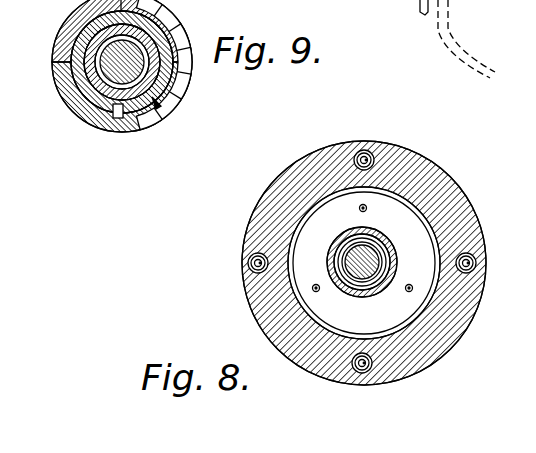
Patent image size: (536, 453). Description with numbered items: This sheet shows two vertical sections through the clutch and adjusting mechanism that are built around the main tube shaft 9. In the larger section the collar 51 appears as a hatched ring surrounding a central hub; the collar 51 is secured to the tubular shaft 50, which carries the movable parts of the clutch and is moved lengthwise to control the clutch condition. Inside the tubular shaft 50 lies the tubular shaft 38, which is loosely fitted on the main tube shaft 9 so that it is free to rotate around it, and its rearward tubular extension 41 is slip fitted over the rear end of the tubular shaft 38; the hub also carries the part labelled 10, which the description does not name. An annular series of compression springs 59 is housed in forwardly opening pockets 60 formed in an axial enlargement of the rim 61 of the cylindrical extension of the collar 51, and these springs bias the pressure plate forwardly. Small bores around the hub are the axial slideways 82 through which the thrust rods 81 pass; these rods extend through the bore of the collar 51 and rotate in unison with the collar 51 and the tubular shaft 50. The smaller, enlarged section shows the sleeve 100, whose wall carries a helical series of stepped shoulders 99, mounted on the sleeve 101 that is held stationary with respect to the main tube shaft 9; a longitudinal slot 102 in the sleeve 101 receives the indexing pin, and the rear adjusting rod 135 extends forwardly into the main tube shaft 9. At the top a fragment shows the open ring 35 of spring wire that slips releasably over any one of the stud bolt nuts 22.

In FIG. 9, the sleeve 100 is at (52, 62).
In FIG. 9, the stepped shoulders 99 is at (150, 2).
In FIG. 9, the main tube shaft 9 is at (154, 77).
In FIG. 8, the main tube shaft 9 is at (378, 260).
In FIG. 9, the rear adjusting rod 135 is at (109, 77).
In FIG. 9, the longitudinal slot 102 is at (118, 118).
In FIG. 9, the sleeve 101 is at (161, 106).
In FIG. 9, the stud bolt nuts 22 is at (418, 6).
In FIG. 9, the open ring 35 is at (425, 15).
In FIG. 8, the collar 51 is at (469, 184).
In FIG. 8, the rim 61 is at (445, 348).
In FIG. 8, the pockets 60 is at (365, 150).
In FIG. 8, the compression springs 59 is at (248, 263).
In FIG. 8, the tubular shaft 50 is at (338, 243).
In FIG. 8, the bearing 10 is at (384, 266).
In FIG. 8, the tubular shaft 38 is at (372, 285).
In FIG. 8, the rearward tubular extension 41 is at (360, 290).
In FIG. 8, the thrust rods 81 is at (367, 208).
In FIG. 8, the axial slideways 82 is at (360, 210).